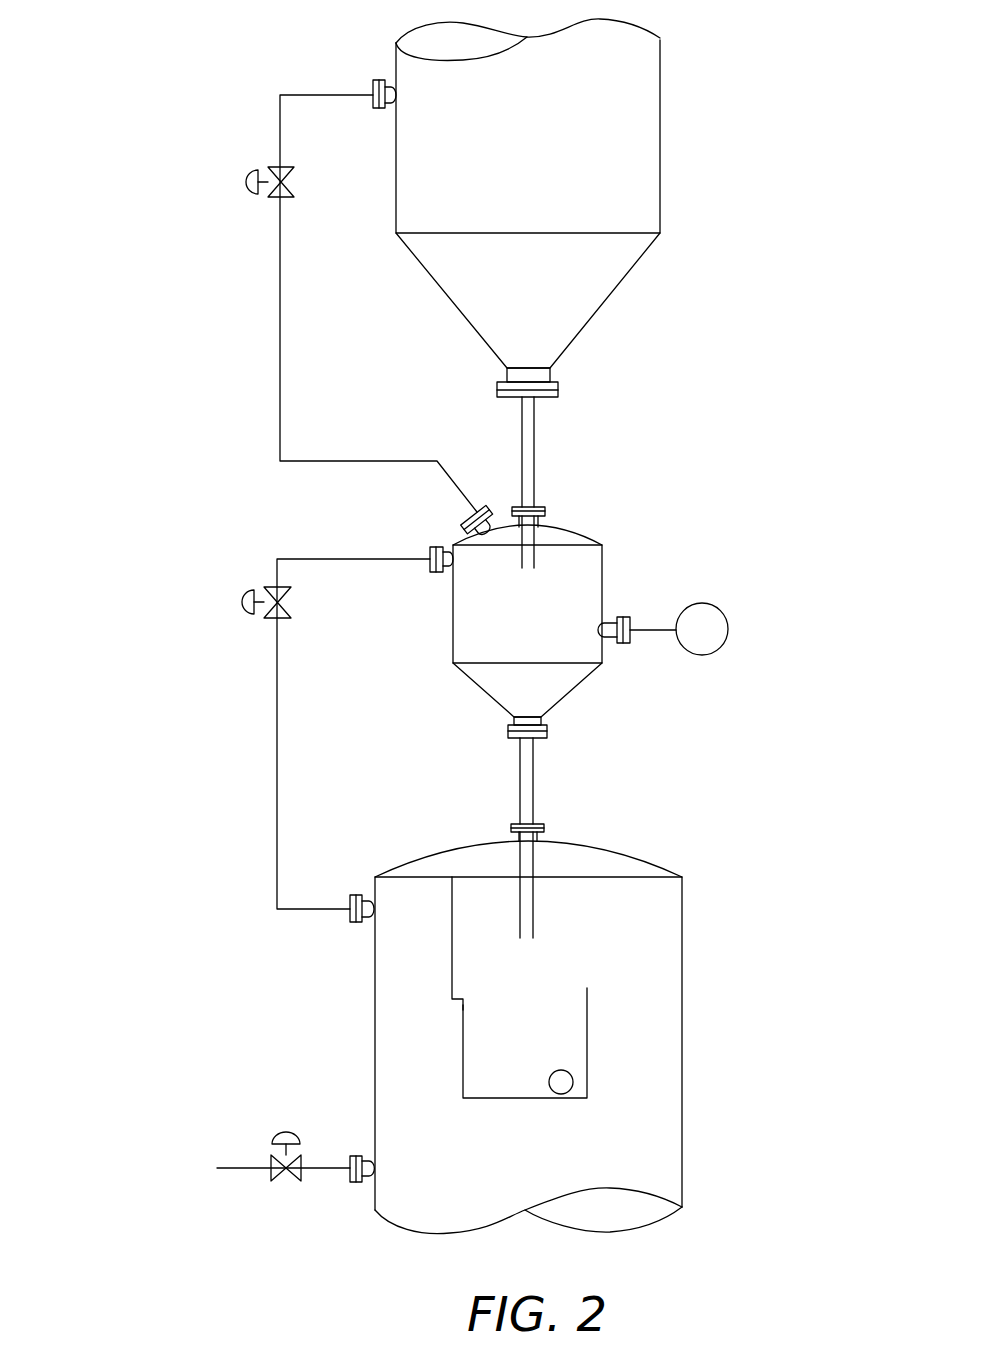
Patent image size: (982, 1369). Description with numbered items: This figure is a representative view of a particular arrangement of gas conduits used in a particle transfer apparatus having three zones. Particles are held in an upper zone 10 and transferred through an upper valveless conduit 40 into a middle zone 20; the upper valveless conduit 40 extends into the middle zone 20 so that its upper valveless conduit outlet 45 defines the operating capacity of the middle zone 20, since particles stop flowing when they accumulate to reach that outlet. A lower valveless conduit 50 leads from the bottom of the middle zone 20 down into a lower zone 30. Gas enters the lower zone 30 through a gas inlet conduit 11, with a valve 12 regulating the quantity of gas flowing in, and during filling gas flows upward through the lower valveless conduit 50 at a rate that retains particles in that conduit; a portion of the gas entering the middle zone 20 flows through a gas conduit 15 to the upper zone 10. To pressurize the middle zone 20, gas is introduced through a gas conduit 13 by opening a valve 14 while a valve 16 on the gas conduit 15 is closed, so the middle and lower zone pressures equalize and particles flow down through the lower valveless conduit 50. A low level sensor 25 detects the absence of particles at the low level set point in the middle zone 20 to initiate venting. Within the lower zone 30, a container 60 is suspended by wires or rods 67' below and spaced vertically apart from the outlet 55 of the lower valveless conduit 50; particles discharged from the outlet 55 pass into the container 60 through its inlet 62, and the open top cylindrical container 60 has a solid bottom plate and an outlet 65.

The upper zone 10 is at (661, 123).
The gas inlet conduit 11 is at (238, 1165).
The valve 12 is at (287, 1130).
The gas conduit 13 is at (400, 558).
The valve 14 is at (250, 592).
The gas conduit 15 is at (350, 93).
The valve 16 is at (255, 170).
The middle zone 20 is at (605, 568).
The low level sensor 25 is at (728, 612).
The lower zone 30 is at (682, 909).
The upper valveless conduit 40 is at (527, 450).
The upper valveless conduit outlet 45 is at (528, 572).
The lower valveless conduit 50 is at (527, 782).
The outlet 55 is at (526, 940).
The container 60 is at (588, 1012).
The inlet 62 is at (549, 966).
The outlet 65 is at (561, 1085).
The wires or rods 67' is at (429, 943).